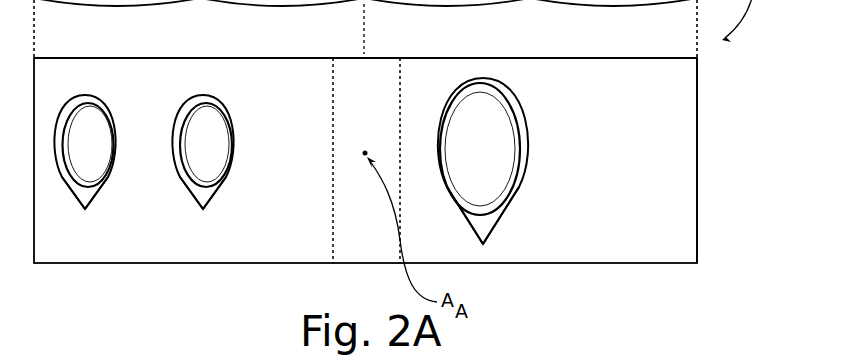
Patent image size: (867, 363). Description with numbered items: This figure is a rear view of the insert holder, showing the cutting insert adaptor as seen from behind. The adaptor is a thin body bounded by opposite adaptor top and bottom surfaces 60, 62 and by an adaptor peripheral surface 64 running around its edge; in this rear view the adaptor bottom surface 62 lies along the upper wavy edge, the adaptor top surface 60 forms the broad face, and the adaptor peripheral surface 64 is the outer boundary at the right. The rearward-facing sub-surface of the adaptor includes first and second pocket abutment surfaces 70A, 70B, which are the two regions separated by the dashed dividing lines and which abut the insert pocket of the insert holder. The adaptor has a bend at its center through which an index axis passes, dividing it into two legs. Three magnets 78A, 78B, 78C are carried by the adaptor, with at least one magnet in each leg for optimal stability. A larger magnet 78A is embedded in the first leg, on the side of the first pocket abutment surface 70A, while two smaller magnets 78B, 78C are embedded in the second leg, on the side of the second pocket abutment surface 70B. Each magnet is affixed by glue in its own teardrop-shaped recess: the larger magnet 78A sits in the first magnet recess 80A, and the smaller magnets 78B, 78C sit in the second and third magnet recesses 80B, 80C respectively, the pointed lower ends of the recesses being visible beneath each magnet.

The adaptor top surface 60 is at (541, 266).
The adaptor bottom surface 62 is at (557, 56).
The adaptor peripheral surface 64 is at (711, 188).
The first pocket abutment surface 70A is at (615, 188).
The second pocket abutment surface 70B is at (305, 182).
The magnet 78A is at (500, 170).
The magnet 78B is at (210, 142).
The magnet 78C is at (92, 120).
The first magnet recess 80A is at (483, 223).
The second magnet recess 80B is at (203, 195).
The third magnet recess 80C is at (84, 195).